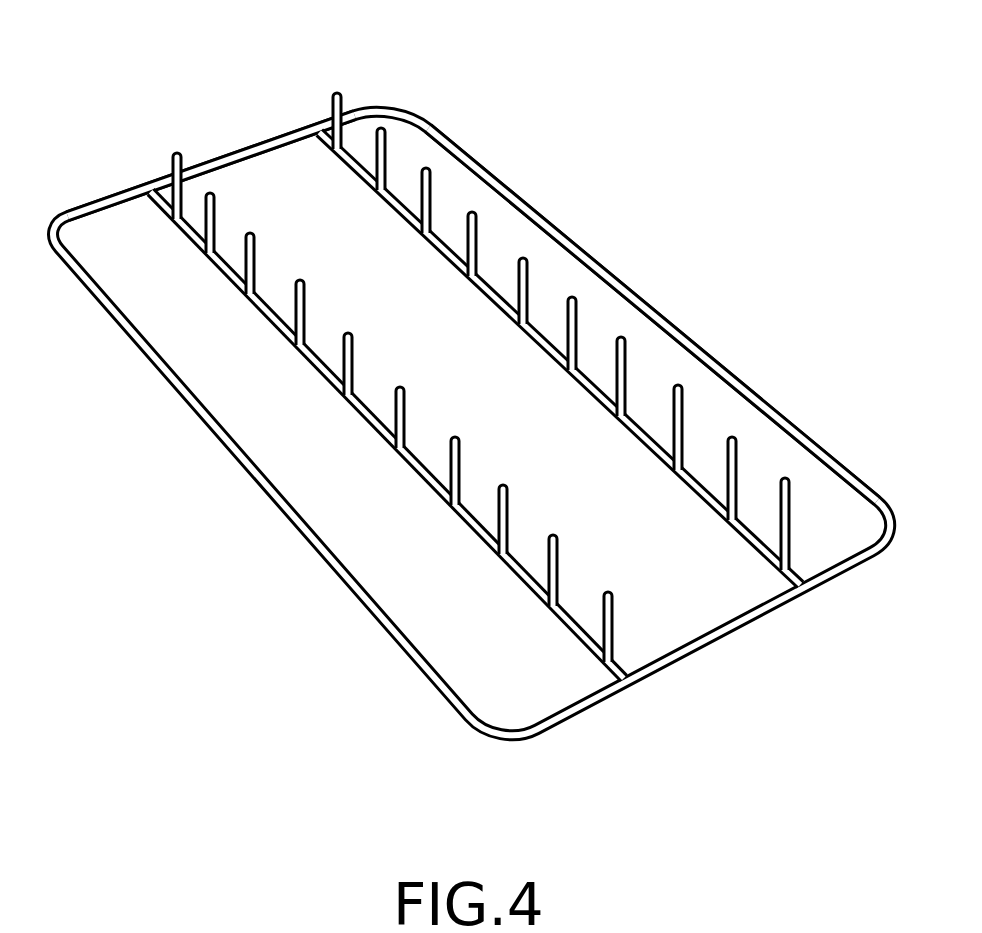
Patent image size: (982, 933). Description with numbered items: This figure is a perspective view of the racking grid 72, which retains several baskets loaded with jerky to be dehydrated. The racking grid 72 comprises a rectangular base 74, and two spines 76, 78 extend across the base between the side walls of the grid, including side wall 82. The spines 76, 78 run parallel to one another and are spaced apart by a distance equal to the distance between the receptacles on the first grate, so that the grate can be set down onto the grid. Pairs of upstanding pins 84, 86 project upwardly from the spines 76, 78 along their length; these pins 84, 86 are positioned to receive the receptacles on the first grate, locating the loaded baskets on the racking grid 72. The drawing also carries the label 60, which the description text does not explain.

The frame 60 is at (730, 632).
The rack assembly 72 is at (471, 389).
The frame side member 74 is at (705, 353).
The upper support rail 76 is at (604, 409).
The lower support rail 78 is at (441, 494).
The frame end member 82 is at (257, 143).
The pins on lower rail 84 is at (172, 158).
The pins on upper rail 86 is at (343, 100).